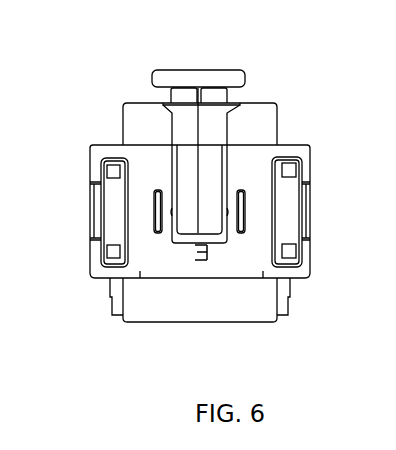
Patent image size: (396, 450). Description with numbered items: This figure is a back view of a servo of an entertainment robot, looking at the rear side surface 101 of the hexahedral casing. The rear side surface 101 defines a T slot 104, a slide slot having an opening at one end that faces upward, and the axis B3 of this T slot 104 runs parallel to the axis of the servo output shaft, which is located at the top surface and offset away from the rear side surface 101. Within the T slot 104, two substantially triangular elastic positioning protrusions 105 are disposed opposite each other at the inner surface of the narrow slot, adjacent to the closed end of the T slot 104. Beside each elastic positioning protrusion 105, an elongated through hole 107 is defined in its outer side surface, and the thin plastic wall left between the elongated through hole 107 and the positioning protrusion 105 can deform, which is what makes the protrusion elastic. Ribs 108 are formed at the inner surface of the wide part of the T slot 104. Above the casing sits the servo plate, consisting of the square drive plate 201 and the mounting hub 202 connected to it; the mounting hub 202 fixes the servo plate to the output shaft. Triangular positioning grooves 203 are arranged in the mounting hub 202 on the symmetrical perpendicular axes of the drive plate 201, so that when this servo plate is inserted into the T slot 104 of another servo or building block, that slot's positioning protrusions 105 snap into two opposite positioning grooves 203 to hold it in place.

The rear side surface 101 is at (248, 163).
The T slot 104 is at (286, 215).
The elastic positioning protrusion 105 is at (222, 215).
The elongated through hole 107 is at (243, 212).
The rib 108 is at (123, 187).
The drive plate 201 is at (214, 73).
The mounting hub 202 is at (183, 97).
The positioning groove 203 is at (198, 87).
The axis of the T slot of the rear side surface B3 is at (203, 128).